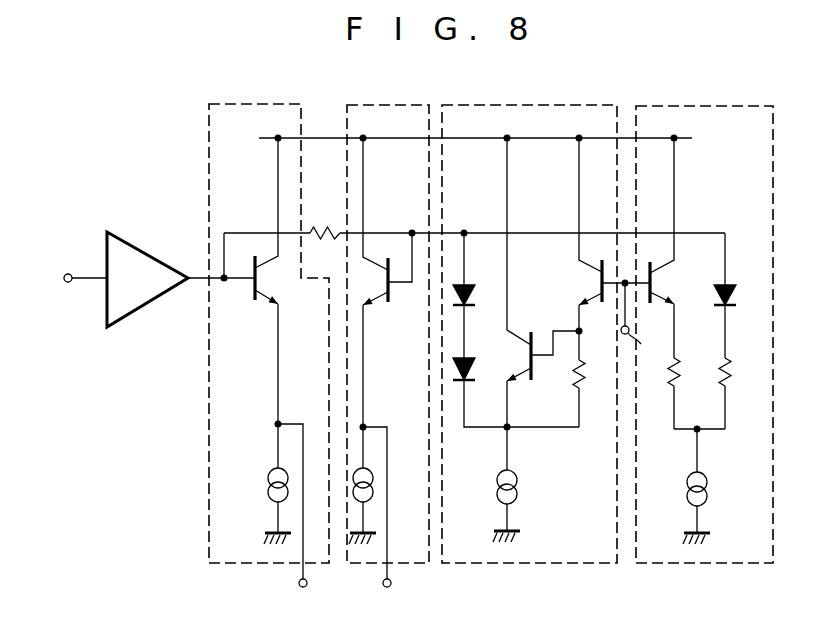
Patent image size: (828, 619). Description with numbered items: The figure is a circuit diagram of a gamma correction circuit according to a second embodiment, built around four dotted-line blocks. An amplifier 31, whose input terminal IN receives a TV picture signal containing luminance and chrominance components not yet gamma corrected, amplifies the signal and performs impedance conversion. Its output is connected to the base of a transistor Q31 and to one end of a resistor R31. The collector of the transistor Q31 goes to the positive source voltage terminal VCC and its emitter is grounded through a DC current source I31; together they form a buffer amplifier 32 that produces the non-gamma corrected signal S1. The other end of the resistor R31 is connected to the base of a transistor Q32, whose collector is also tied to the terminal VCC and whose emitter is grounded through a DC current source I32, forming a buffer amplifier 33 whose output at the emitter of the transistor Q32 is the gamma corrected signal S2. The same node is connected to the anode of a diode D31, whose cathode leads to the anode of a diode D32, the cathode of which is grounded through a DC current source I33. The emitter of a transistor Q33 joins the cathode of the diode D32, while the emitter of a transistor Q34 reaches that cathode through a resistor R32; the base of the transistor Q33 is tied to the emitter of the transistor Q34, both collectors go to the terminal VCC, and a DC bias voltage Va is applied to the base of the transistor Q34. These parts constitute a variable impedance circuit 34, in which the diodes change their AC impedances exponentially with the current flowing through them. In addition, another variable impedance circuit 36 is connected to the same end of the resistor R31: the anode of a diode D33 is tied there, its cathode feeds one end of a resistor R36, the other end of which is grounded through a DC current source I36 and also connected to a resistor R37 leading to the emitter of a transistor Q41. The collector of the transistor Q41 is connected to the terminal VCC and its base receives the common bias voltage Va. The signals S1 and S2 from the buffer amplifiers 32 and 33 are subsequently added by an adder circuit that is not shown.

The amplifier 31 is at (151, 253).
The buffer amplifier 32 is at (231, 104).
The buffer amplifier 33 is at (412, 105).
The variable impedance circuit 34 is at (602, 84).
The variable impedance circuit 36 is at (747, 106).
The transistor Q31 is at (262, 283).
The transistor Q32 is at (384, 305).
The transistor Q33 is at (526, 331).
The transistor Q34 is at (597, 282).
The transistor Q41 is at (658, 280).
The diode D31 is at (473, 284).
The diode D32 is at (477, 372).
The diode D33 is at (729, 284).
The resistor R31 is at (318, 228).
The resistor R32 is at (575, 382).
The resistor R36 is at (720, 370).
The resistor R37 is at (677, 382).
The DC current source I31 is at (267, 480).
The DC current source I32 is at (374, 480).
The DC current source I33 is at (517, 492).
The DC current source I36 is at (708, 496).
The input terminal IN is at (81, 267).
The positive source voltage terminal VCC is at (496, 139).
The non-gamma corrected signal S1 is at (295, 520).
The gamma corrected signal S2 is at (380, 522).
The DC bias voltage Va is at (641, 316).